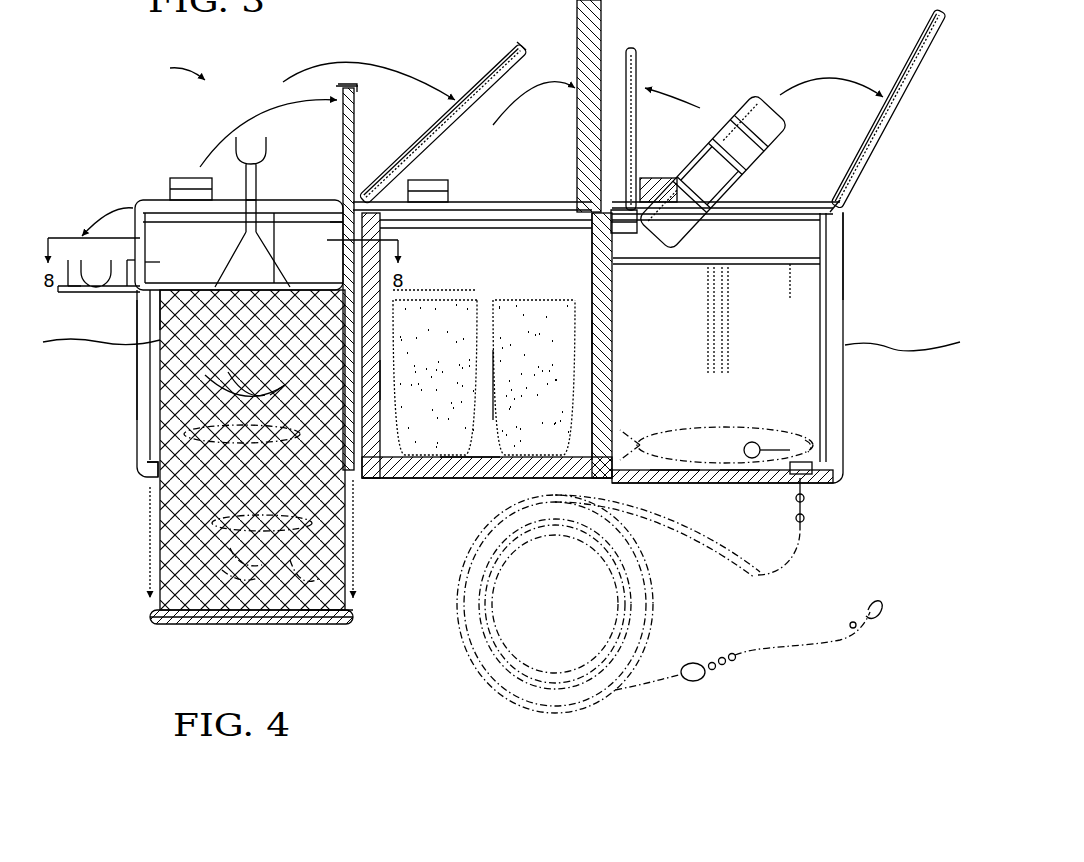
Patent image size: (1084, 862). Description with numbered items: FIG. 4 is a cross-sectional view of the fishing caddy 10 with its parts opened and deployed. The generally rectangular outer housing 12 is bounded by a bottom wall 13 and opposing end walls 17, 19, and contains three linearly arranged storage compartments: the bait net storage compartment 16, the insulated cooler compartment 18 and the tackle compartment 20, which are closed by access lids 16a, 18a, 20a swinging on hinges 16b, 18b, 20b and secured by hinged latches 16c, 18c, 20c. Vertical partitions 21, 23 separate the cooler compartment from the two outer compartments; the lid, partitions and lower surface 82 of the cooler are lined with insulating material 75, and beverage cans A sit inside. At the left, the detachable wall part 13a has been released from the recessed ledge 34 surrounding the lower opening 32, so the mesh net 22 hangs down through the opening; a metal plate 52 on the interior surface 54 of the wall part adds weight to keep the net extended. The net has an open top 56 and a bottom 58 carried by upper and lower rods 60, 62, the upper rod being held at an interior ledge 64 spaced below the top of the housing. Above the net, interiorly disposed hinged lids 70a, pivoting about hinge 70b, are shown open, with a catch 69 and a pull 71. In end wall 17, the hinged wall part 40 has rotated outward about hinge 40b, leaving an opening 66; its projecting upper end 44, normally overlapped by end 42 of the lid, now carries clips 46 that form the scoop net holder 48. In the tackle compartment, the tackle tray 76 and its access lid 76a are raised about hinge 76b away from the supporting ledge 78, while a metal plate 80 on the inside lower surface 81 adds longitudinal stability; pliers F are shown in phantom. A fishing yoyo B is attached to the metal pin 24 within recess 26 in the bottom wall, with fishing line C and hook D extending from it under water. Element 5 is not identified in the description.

The fishing caddy 10 is at (173, 71).
The outer housing 12 is at (846, 388).
The bottom wall 13 is at (433, 480).
The detachable wall part 13a is at (310, 626).
The bait net storage compartment 16 is at (245, 450).
The access lid 16a is at (478, 92).
The hinge 16b is at (356, 200).
The hinged latch 16c is at (187, 176).
The end wall 17 is at (135, 362).
The cooler compartment 18 is at (513, 248).
The access lid 18a is at (603, 25).
The hinge 18b is at (588, 205).
The hinged latch 18c is at (432, 180).
The end wall 19 is at (845, 310).
The tackle compartment 20 is at (785, 366).
The access lid 20a is at (905, 75).
The hinge 20b is at (845, 212).
The hinged latch 20c is at (650, 200).
The vertical partition 21 is at (383, 370).
The mesh net 22 is at (148, 398).
The vertical partition 23 is at (614, 328).
The metal pin 24 is at (812, 476).
The recess 26 is at (805, 455).
The lower opening 32 is at (280, 440).
The recessed ledge 34 is at (150, 445).
The hinged wall part 40 is at (90, 295).
The hinge 40b is at (168, 338).
The end of lid 42 is at (517, 48).
The projecting upper end 44 is at (60, 294).
The clips 46 is at (116, 295).
The scoop net holder 48 is at (76, 298).
The hook 5 is at (246, 374).
The metal plate 52 is at (255, 626).
The interior surface 54 is at (208, 626).
The open top 56 is at (232, 370).
The bottom 58 is at (262, 532).
The upper rod 60 is at (272, 380).
The lower rod 62 is at (292, 563).
The interior ledge 64 is at (244, 283).
The opening 66 is at (150, 196).
The catch 69 is at (152, 278).
The interiorly-disposed hinged lid 70a is at (346, 166).
The hinge 70b is at (398, 290).
The pull 71 is at (356, 88).
The insulating material 75 is at (575, 42).
The tackle tray 76 is at (742, 112).
The access lid 76a is at (640, 66).
The hinge 76b is at (638, 243).
The ledge 78 is at (794, 266).
The metal plate 80 is at (672, 482).
The inside lower surface 81 is at (740, 483).
The lower surface 82 is at (470, 480).
The beverage cans A is at (495, 372).
The fishing yoyo B is at (650, 602).
The fishing line C is at (660, 686).
The hook D is at (853, 618).
The pliers F is at (714, 440).